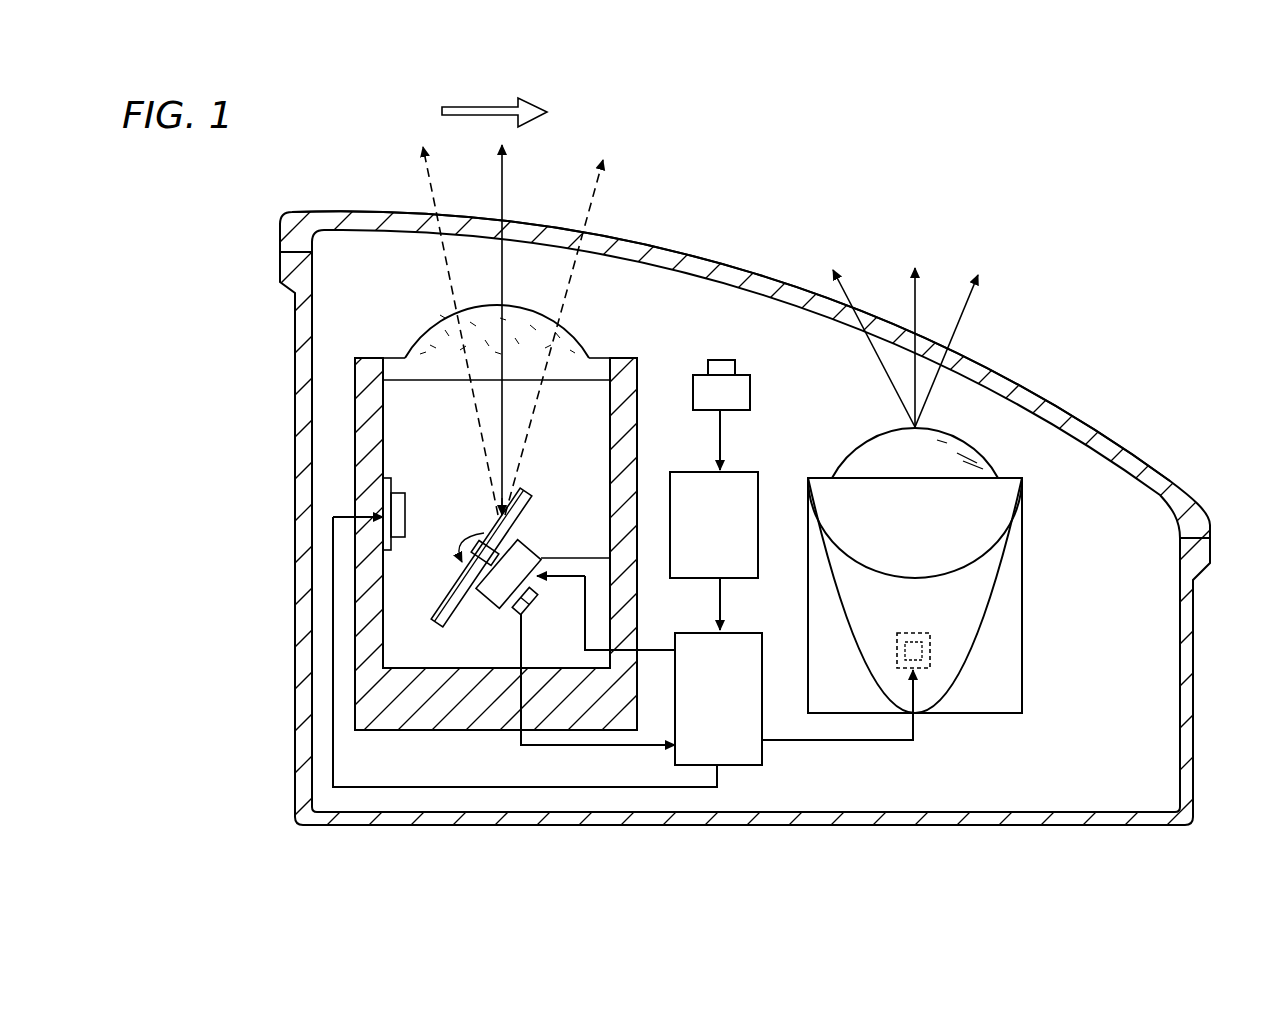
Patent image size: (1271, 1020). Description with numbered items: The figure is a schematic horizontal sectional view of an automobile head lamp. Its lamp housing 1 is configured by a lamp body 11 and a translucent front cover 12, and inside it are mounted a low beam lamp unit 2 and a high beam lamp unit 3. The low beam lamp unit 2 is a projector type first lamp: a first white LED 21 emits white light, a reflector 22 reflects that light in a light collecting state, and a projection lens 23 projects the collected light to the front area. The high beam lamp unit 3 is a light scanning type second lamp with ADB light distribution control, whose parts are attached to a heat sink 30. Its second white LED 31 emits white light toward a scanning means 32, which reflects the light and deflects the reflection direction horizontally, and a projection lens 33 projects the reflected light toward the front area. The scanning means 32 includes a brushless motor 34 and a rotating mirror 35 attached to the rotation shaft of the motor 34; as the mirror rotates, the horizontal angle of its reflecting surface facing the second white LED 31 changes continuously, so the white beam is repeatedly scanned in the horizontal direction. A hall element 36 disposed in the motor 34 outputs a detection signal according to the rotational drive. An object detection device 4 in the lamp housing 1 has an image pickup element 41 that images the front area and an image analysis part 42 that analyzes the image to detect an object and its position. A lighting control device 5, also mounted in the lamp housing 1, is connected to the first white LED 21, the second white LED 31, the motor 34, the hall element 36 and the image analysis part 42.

The lamp housing 1 is at (1197, 489).
The lamp body 11 is at (1191, 700).
The translucent front cover 12 is at (1074, 418).
The low beam lamp unit 2 is at (953, 512).
The first white LED 21 is at (935, 672).
The reflector 22 is at (988, 642).
The projection lens 23 is at (967, 450).
The high beam lamp unit 3 is at (505, 459).
The heat sink 30 is at (455, 723).
The second white LED 31 is at (396, 490).
The scanning means 32 is at (502, 552).
The projection lens 33 is at (568, 342).
The brushless motor 34 is at (523, 563).
The rotating mirror 35 is at (461, 592).
The hall element 36 is at (520, 619).
The object detection device 4 is at (729, 456).
The image pickup element 41 is at (693, 393).
The image analysis part 42 is at (760, 500).
The lighting control device 5 is at (764, 768).